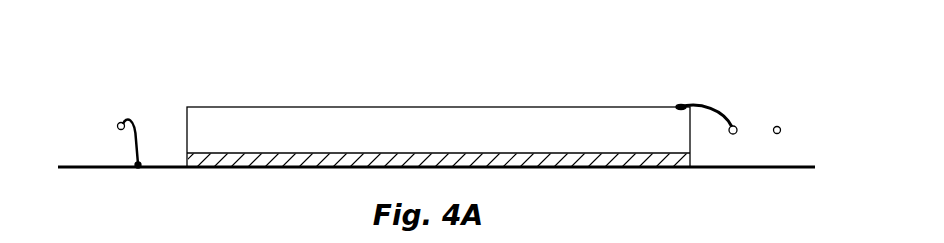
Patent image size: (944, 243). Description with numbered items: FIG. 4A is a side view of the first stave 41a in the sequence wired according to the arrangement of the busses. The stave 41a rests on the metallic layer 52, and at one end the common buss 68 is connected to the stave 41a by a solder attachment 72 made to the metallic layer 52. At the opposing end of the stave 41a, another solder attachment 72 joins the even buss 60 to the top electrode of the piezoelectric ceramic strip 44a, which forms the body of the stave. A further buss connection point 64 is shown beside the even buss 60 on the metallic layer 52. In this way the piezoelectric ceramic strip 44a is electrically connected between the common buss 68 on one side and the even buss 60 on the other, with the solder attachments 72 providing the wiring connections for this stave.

The metallic layer 52 is at (82, 166).
The stave 41a is at (415, 107).
The piezoelectric ceramic strip 44a is at (442, 144).
The common buss 68 is at (117, 127).
The solder attachment 72 is at (139, 164).
The even buss 60 is at (740, 125).
The bond pad 64 is at (781, 129).